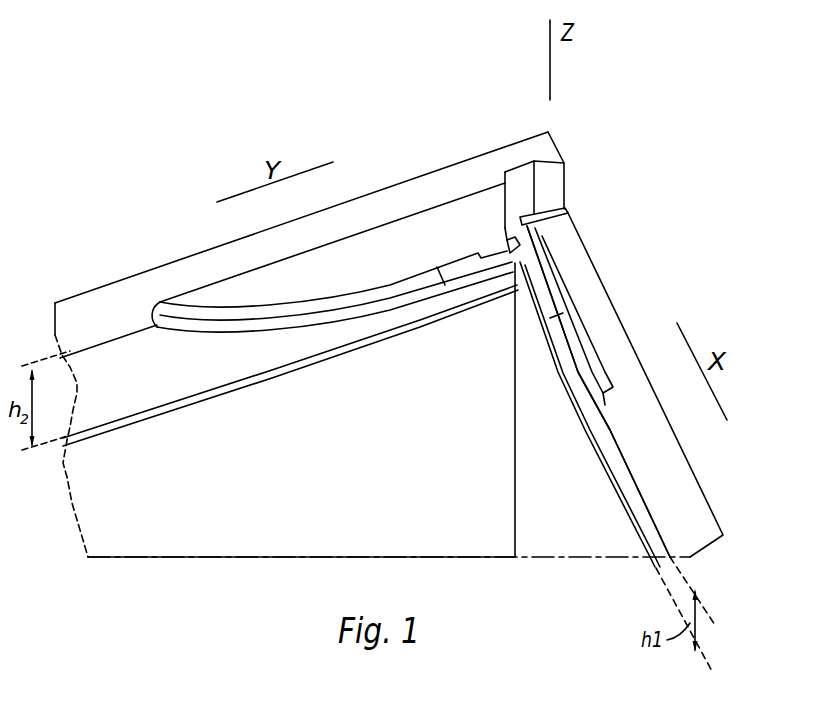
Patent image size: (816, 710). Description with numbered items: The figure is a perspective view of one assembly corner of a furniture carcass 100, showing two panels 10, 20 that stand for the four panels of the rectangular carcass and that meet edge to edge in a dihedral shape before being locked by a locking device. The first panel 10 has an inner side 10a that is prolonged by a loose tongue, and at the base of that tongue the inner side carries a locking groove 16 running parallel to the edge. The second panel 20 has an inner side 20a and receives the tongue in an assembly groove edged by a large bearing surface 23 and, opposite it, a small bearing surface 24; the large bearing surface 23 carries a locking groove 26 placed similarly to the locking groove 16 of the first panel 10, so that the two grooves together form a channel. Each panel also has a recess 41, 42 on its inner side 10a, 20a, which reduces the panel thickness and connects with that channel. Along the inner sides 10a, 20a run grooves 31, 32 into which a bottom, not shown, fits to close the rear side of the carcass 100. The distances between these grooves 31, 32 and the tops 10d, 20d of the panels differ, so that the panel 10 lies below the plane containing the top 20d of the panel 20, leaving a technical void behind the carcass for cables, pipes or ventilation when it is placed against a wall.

The furniture carcass 100 is at (219, 128).
The second panel 20 is at (206, 238).
The top of the second panel 20d is at (123, 323).
The inner side of the second panel 20a is at (355, 471).
The recess 42 is at (219, 306).
The locking groove 26 is at (497, 243).
The small bearing surface 24 is at (507, 196).
The large bearing surface 23 is at (532, 180).
The locking groove 16 is at (566, 213).
The first panel 10 is at (672, 462).
The top of the first panel 10d is at (692, 505).
The inner side of the first panel 10a is at (582, 523).
The recess 41 is at (580, 353).
The groove 31 is at (638, 525).
The groove 32 is at (86, 440).